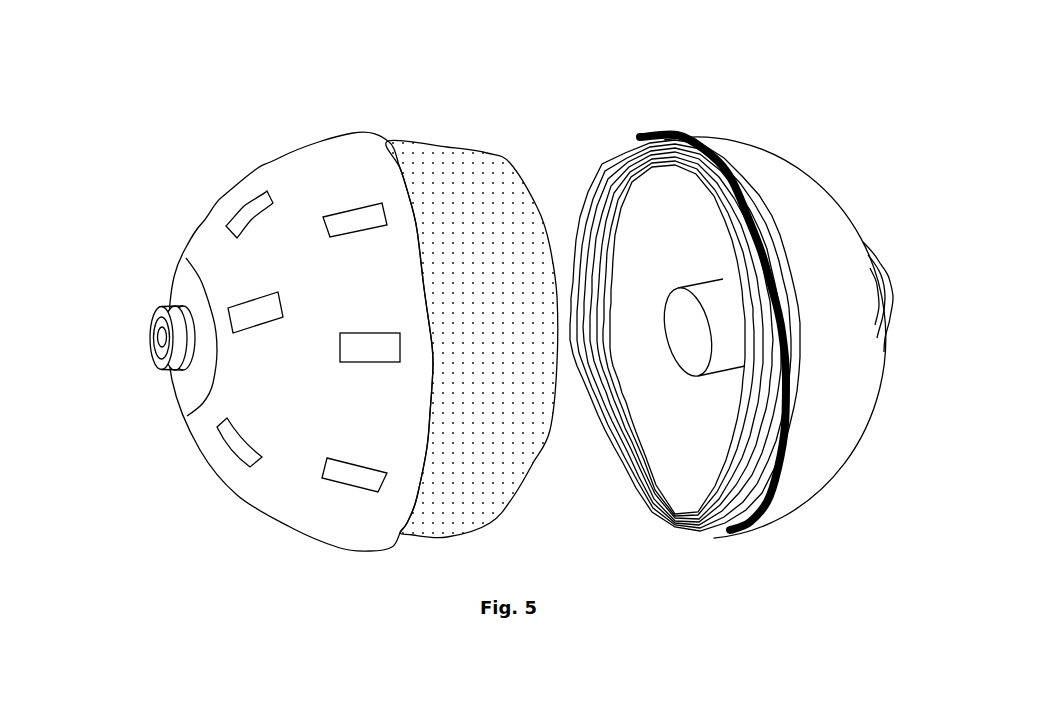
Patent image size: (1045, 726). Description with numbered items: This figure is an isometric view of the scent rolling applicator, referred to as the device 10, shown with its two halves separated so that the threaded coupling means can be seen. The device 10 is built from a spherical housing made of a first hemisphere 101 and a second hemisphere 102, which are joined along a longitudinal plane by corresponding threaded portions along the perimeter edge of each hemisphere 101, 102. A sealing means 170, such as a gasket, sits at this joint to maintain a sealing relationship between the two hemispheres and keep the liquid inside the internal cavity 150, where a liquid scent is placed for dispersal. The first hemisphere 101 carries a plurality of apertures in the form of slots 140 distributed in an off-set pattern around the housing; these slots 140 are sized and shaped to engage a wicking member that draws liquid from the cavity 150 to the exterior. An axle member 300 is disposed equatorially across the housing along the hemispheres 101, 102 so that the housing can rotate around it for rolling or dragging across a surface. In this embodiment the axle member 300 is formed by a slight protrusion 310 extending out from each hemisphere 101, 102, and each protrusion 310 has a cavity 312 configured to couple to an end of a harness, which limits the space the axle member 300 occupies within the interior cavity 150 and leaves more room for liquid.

The device 10 is at (105, 91).
The first hemisphere 101 is at (298, 390).
The second hemisphere 102 is at (833, 307).
The slots 140 is at (348, 205).
The internal cavity 150 is at (714, 433).
The sealing means 170 is at (700, 140).
The axle member 300 is at (712, 297).
The protrusion 310 is at (167, 303).
The cavity 312 is at (157, 343).